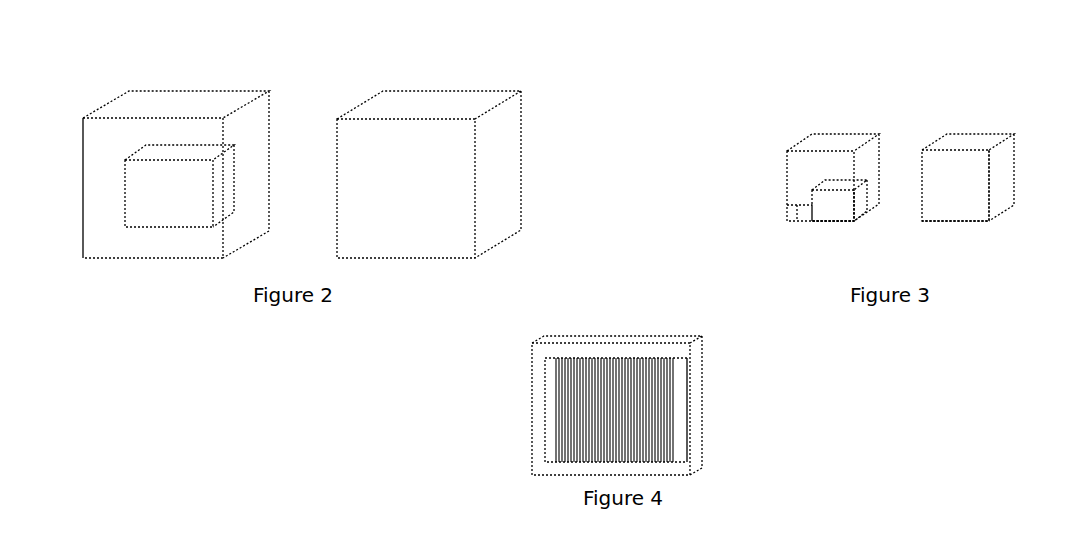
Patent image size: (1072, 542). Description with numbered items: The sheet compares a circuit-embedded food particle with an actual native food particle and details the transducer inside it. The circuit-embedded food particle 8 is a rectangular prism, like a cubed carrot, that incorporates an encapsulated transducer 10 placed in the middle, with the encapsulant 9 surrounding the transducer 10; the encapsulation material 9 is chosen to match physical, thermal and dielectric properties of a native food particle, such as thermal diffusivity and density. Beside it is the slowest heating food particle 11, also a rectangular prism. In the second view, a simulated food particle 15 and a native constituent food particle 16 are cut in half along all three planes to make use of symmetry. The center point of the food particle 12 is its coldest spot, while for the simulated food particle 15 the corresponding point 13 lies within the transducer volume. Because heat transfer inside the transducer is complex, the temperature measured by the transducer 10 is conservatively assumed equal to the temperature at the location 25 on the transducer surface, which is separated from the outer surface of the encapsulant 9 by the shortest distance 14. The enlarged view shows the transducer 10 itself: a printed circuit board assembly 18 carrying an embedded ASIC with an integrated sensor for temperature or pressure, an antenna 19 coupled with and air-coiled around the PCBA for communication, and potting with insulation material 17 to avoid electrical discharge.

In FIG. 2, the circuit-embedded food particle 8 is at (286, 76).
In FIG. 2, the encapsulation material 9 is at (97, 155).
In FIG. 2, the encapsulated transducer 10 is at (233, 165).
In FIG. 4, the encapsulated transducer 10 is at (660, 321).
In FIG. 2, the slowest heating food particle 11 is at (539, 75).
In FIG. 3, the center point of the food particle 12 is at (990, 221).
In FIG. 3, the corresponding point 13 is at (858, 221).
In FIG. 3, the distance 14 is at (800, 208).
In FIG. 3, the simulated food particle 15 is at (871, 113).
In FIG. 3, the native constituent food particle 16 is at (1014, 113).
In FIG. 4, the insulation material 17 is at (547, 348).
In FIG. 4, the printed circuit board assembly 18 is at (552, 417).
In FIG. 4, the antenna 19 is at (670, 358).
In FIG. 3, the location 25 is at (808, 192).